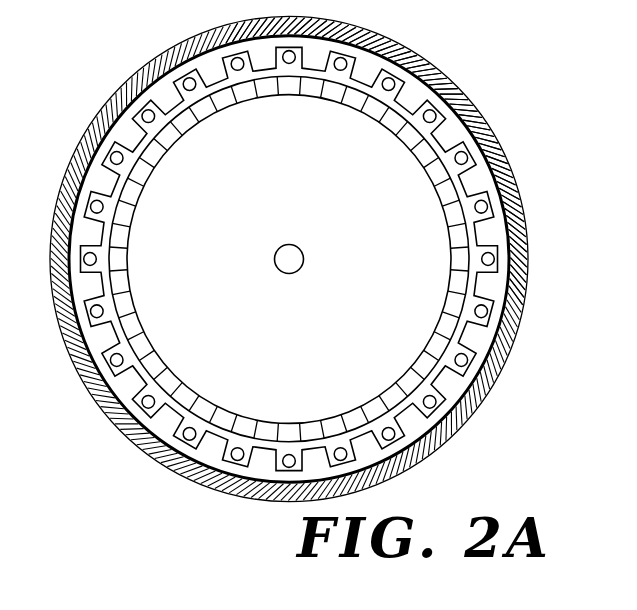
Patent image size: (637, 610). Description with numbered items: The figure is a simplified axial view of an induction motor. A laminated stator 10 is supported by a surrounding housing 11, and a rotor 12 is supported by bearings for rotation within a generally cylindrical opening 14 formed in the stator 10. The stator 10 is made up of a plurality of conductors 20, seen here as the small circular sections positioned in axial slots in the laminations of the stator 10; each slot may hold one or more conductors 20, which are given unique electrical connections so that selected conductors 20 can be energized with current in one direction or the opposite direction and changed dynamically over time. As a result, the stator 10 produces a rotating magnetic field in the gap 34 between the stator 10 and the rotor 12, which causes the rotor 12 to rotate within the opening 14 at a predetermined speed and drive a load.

The laminated stator 10 is at (108, 130).
The housing 11 is at (343, 25).
The rotor 12 is at (293, 154).
The cylindrical opening 14 is at (73, 343).
The conductors 20 is at (240, 461).
The gap 34 is at (482, 175).